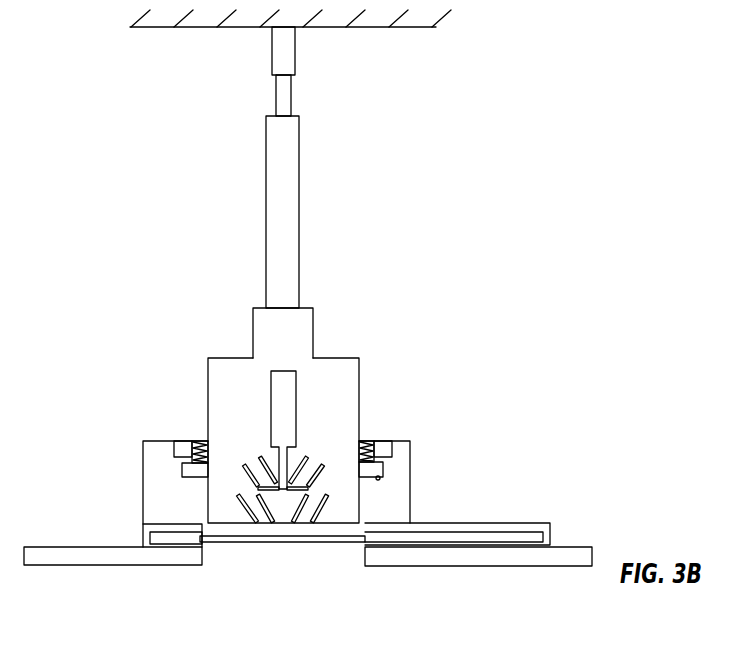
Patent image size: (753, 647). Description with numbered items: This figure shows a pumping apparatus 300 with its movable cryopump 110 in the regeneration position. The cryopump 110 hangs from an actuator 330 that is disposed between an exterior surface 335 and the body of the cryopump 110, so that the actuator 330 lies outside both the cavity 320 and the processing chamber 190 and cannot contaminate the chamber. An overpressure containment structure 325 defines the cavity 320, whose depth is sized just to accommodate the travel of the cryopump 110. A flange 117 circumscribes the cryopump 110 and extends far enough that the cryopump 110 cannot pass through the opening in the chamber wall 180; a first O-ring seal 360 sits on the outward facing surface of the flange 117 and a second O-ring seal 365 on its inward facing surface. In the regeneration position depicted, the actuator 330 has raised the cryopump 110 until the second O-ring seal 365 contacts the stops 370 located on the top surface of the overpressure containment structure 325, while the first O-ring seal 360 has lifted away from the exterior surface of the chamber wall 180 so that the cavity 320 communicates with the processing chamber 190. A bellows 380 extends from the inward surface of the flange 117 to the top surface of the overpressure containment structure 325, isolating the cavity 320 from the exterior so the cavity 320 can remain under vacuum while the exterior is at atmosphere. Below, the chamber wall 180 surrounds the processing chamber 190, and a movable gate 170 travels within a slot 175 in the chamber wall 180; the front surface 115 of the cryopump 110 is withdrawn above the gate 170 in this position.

The pumping apparatus 300 is at (112, 302).
The exterior surface 335 is at (377, 28).
The actuator 330 is at (299, 179).
The cryopump 110 is at (205, 410).
The front surface 115 is at (248, 525).
The flange 117 is at (182, 470).
The second O-ring seal 365 is at (185, 462).
The first O-ring seal 360 is at (187, 478).
The chamber wall 180 is at (176, 567).
The processing chamber 190 is at (307, 590).
The movable gate 170 is at (310, 539).
The overpressure containment structure 325 is at (410, 440).
The cavity 320 is at (410, 511).
The stops 370 is at (382, 440).
The bellows 380 is at (373, 448).
The slot 175 is at (433, 530).